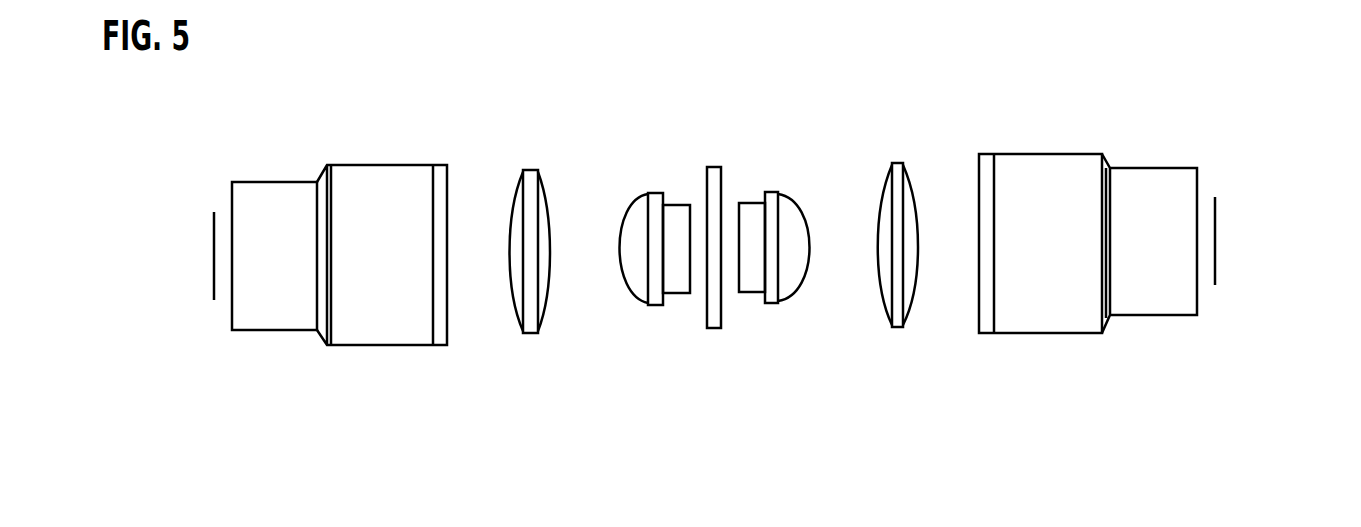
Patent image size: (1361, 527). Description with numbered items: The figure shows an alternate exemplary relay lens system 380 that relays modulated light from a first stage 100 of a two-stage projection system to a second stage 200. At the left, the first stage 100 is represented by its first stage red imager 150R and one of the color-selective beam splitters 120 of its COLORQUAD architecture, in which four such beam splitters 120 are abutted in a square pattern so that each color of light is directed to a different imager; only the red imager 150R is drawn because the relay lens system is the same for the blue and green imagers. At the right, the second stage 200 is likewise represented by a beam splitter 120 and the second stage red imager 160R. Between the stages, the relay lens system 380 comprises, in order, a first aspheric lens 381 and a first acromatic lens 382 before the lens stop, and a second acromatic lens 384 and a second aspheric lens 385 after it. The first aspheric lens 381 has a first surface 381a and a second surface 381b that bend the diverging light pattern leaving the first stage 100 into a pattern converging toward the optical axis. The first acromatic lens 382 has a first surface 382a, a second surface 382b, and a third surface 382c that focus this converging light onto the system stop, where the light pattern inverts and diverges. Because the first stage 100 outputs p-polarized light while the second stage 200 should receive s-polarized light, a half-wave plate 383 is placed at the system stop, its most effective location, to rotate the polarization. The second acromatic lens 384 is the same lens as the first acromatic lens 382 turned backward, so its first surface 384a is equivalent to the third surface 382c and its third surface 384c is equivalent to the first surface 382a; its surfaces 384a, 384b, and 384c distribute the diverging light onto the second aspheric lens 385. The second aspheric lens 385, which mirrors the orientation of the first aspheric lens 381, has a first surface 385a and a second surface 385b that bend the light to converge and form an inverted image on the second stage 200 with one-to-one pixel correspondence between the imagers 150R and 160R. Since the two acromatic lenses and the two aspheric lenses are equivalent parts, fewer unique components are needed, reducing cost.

The first stage 100 is at (448, 69).
The second stage 200 is at (1258, 56).
The color-selective beam splitters 120 is at (300, 350).
The first stage red imager 150R is at (214, 285).
The second stage red imager 160R is at (1215, 263).
The relay lens system 380 is at (915, 66).
The first aspheric lens 381 is at (504, 239).
The first surface of first aspheric lens 381a is at (504, 297).
The second surface of first aspheric lens 381b is at (553, 298).
The first acromatic lens 382 is at (637, 185).
The first surface of first acromatic lens 382a is at (610, 243).
The second surface of first acromatic lens 382b is at (669, 212).
The third surface of first acromatic lens 382c is at (696, 211).
The half-wave plate 383 is at (713, 166).
The second acromatic lens 384 is at (791, 232).
The first surface of second acromatic lens 384a is at (737, 279).
The second surface of second acromatic lens 384b is at (759, 279).
The third surface of second acromatic lens 384c is at (815, 253).
The second aspheric lens 385 is at (911, 192).
The first surface of second aspheric lens 385a is at (875, 196).
The second surface of second aspheric lens 385b is at (926, 203).